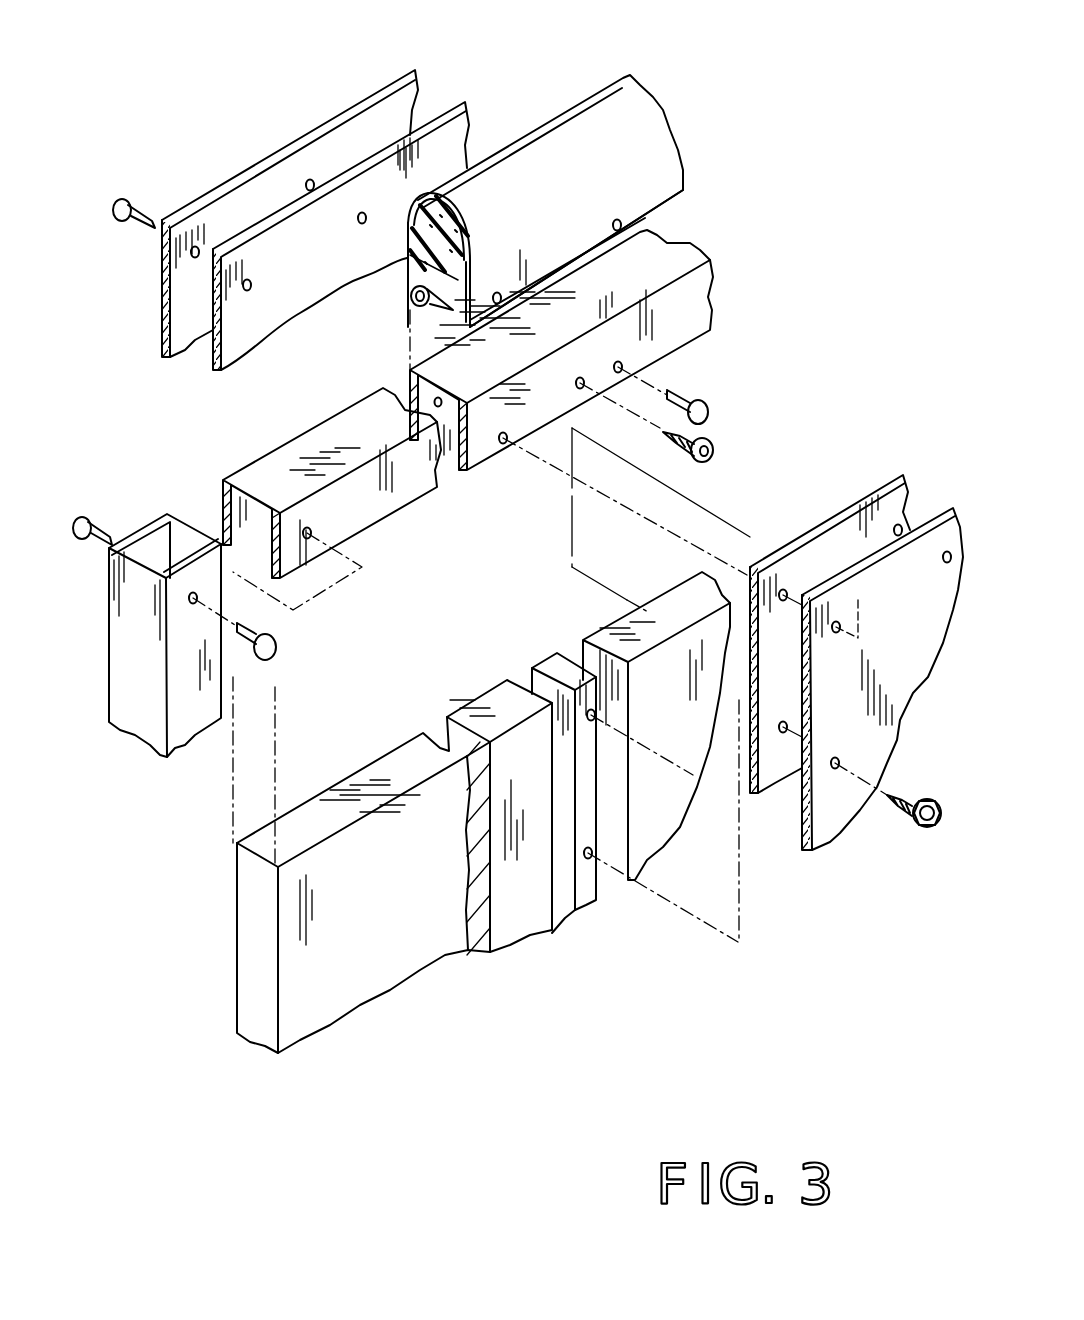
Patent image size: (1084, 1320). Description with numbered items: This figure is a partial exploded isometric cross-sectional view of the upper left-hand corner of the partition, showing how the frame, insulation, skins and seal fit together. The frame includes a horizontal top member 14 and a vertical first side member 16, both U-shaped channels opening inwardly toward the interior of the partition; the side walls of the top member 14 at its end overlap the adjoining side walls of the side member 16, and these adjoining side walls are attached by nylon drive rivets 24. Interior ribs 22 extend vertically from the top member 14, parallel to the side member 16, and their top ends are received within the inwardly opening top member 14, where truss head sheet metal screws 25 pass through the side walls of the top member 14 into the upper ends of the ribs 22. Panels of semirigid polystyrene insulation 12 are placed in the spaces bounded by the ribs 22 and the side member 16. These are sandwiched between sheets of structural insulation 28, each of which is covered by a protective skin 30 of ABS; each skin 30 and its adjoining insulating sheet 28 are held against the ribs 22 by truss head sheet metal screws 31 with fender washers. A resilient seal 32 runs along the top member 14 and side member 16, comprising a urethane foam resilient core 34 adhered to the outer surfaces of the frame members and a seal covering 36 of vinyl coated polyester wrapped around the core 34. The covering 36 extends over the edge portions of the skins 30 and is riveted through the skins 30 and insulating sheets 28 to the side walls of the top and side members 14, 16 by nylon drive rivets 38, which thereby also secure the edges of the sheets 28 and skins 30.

The panels of semirigid polystyrene insulation 12 is at (482, 718).
The top member 14 is at (707, 285).
The first side member 16 is at (158, 722).
The interior ribs 22 is at (557, 663).
The nylon drive rivets 24 is at (93, 517).
The truss head sheet metal screws 25 is at (408, 315).
The sheets of structural insulation 28 is at (455, 103).
The protective skin 30 is at (310, 128).
The truss head sheet metal screws 31 is at (912, 820).
The resilient seal 32 is at (577, 90).
The resilient core 34 is at (467, 233).
The seal covering 36 is at (677, 150).
The nylon drive rivets 38 is at (121, 198).